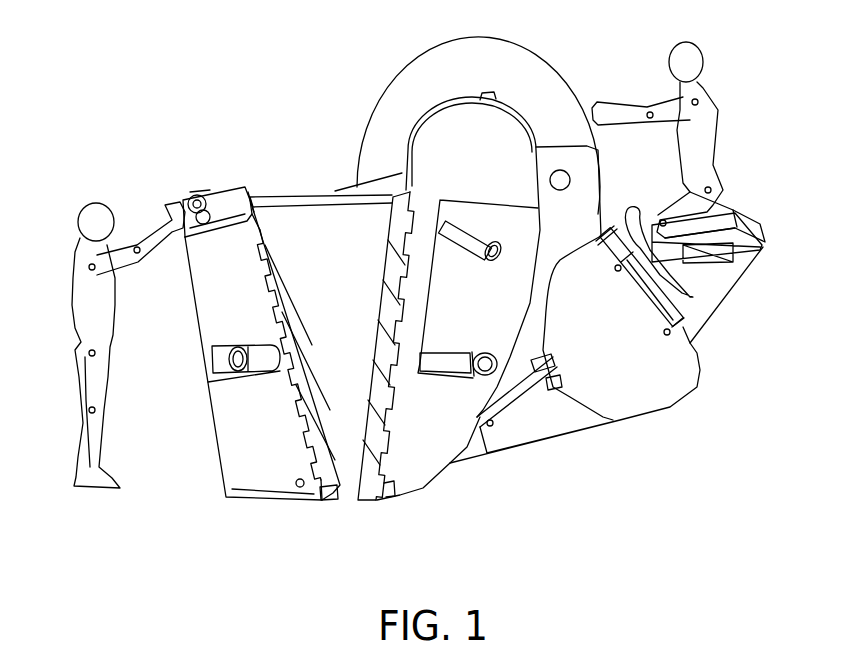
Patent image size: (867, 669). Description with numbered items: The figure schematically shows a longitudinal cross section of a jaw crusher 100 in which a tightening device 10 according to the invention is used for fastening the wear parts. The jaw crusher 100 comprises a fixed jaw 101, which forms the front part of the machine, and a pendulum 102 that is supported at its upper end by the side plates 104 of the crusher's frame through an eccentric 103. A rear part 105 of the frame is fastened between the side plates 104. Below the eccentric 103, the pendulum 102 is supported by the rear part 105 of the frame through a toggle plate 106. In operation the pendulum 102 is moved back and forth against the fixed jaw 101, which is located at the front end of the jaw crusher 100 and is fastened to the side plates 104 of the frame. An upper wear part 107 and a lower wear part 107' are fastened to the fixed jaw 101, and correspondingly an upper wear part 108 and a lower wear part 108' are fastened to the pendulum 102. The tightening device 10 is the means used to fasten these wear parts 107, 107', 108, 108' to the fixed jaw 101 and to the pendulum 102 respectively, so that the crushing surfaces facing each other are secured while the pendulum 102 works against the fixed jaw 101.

The jaw crusher 100 is at (299, 79).
The tightening device 10 is at (230, 360).
The fixed jaw 101 is at (233, 457).
The pendulum 102 is at (420, 457).
The eccentric 103 is at (475, 152).
The side plates 104 is at (330, 196).
The rear part 105 is at (653, 350).
The toggle plate 106 is at (533, 383).
The upper wear part 107 is at (251, 161).
The lower wear part 107' is at (284, 529).
The upper wear part 108 is at (366, 346).
The lower wear part 108' is at (357, 528).